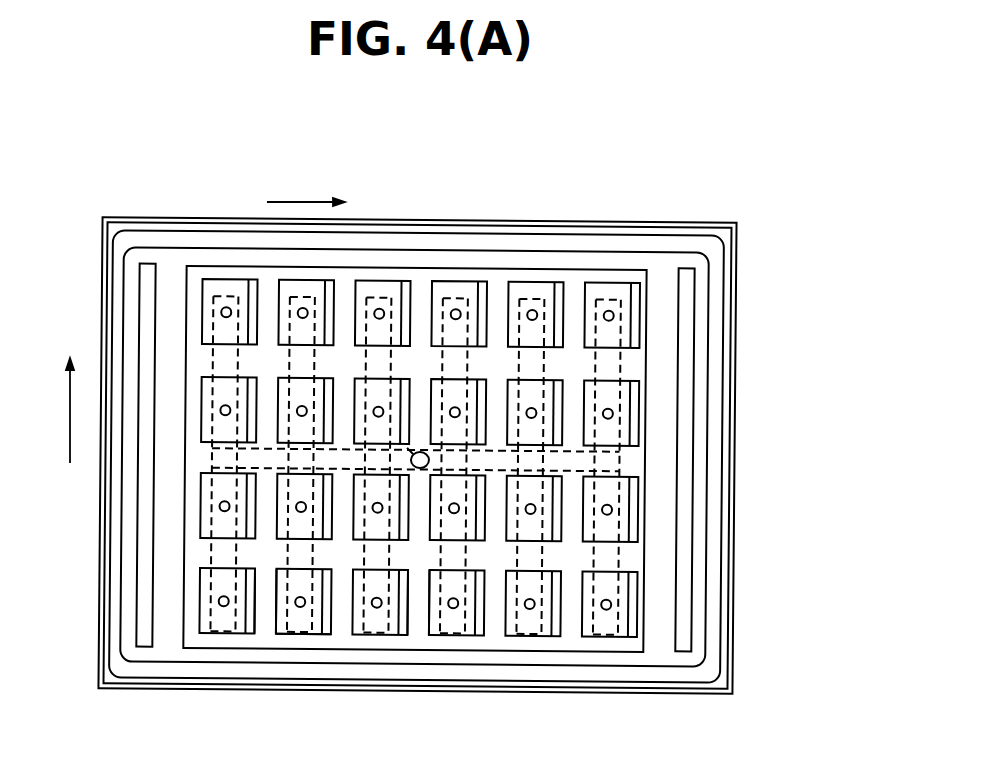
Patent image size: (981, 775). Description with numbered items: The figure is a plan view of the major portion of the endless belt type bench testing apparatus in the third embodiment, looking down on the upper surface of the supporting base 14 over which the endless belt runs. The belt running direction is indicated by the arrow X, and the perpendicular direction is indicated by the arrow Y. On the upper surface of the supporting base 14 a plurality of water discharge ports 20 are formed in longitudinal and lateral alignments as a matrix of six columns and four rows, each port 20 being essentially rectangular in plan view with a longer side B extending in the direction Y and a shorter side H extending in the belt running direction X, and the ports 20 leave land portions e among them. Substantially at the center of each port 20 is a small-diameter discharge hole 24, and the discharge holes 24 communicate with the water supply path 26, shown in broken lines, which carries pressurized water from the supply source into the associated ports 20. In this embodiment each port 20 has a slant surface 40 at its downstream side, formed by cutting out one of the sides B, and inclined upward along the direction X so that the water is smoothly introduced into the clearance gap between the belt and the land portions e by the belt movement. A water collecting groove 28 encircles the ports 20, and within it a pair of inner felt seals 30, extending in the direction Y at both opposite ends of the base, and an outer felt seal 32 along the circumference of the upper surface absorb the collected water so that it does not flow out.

The supporting base 14 is at (477, 216).
The water discharge port 20 is at (612, 628).
The discharge hole 24 is at (613, 512).
The water supply path 26 is at (217, 453).
The water collecting groove 28 is at (661, 280).
The inner felt seal 30 is at (683, 507).
The outer felt seal 32 is at (715, 367).
The slant surface 40 is at (560, 288).
The longer side B is at (272, 620).
The shorter side H is at (308, 632).
The land portion e is at (422, 633).
The belt running direction X is at (306, 187).
The direction perpendicular to the belt running direction Y is at (52, 410).